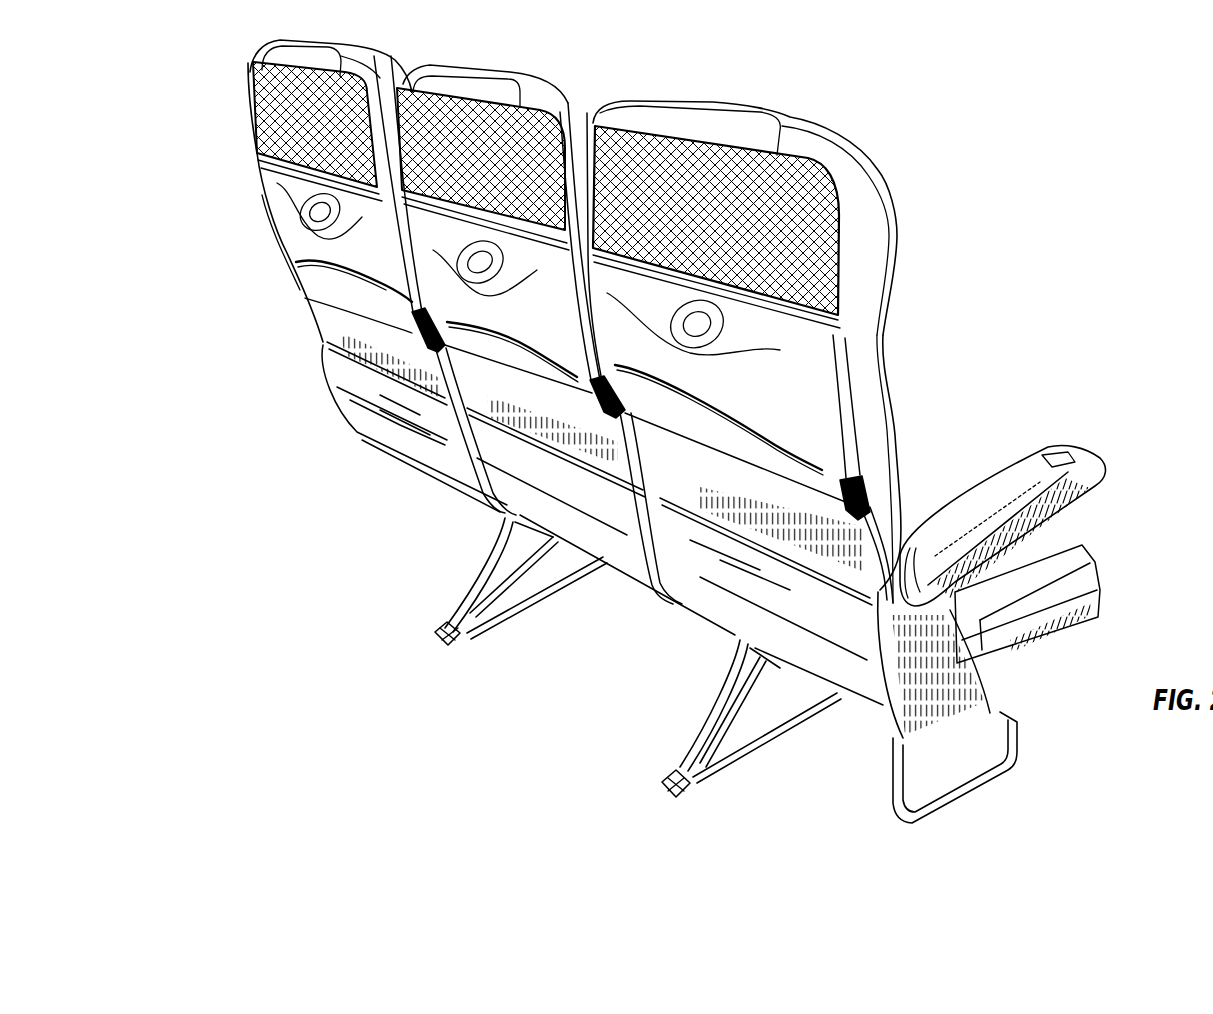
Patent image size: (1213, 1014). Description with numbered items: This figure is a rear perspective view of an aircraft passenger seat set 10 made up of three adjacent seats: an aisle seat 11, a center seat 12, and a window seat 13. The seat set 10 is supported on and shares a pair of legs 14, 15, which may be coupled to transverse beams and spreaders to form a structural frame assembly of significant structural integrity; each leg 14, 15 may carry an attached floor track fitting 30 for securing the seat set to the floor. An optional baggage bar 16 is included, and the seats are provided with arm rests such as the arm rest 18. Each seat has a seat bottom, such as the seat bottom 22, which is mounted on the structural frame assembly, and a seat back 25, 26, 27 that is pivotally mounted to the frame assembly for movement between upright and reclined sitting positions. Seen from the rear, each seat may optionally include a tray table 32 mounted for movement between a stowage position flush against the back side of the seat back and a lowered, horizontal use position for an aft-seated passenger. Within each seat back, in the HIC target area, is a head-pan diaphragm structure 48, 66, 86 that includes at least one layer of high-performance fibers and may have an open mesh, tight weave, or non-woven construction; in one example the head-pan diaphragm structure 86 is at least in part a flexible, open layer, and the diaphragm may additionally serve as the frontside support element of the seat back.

The seat set 10 is at (942, 183).
The aisle seat 11 is at (883, 347).
The center seat 12 is at (577, 90).
The window seat 13 is at (247, 111).
The leg 14 is at (725, 703).
The leg 15 is at (477, 583).
The baggage bar 16 is at (990, 716).
The arm rest 18 is at (1068, 500).
The seat bottom 22 is at (1066, 563).
The seat back 25 is at (877, 410).
The seat back 26 is at (413, 70).
The seat back 27 is at (246, 69).
The floor track fitting 30 is at (433, 633).
The tray table 32 is at (293, 242).
The head-pan diaphragm structure 48 is at (726, 197).
The breathable region 66 is at (631, 144).
The head-pan diaphragm structure 86 is at (572, 123).